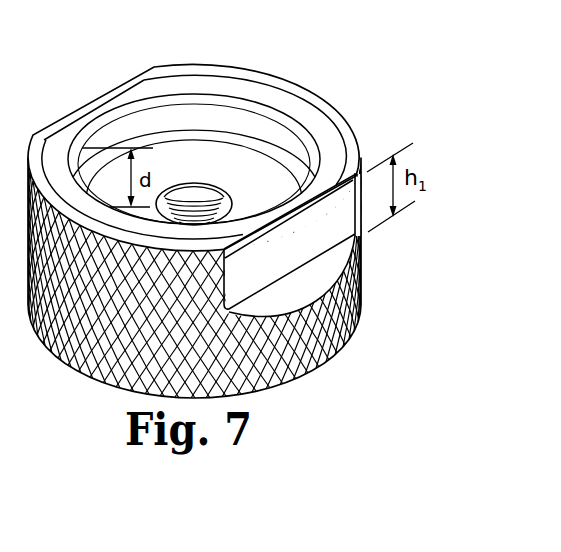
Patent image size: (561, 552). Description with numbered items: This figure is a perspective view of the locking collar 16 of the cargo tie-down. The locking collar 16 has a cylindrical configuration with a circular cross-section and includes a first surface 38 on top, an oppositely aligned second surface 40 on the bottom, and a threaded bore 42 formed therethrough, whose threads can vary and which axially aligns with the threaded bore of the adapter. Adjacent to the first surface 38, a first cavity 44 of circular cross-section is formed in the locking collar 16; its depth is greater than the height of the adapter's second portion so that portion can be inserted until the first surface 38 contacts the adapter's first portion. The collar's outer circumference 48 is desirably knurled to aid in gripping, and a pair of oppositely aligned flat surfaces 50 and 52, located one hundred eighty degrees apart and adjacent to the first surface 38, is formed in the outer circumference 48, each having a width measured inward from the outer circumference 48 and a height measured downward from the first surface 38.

The locking collar 16 is at (358, 80).
The first surface 38 is at (272, 85).
The second surface 40 is at (87, 376).
The threaded bore 42 is at (212, 185).
The first cavity 44 is at (201, 102).
The outer circumference 48 is at (359, 320).
The flat surface 50 is at (70, 115).
The flat surface 52 is at (300, 251).